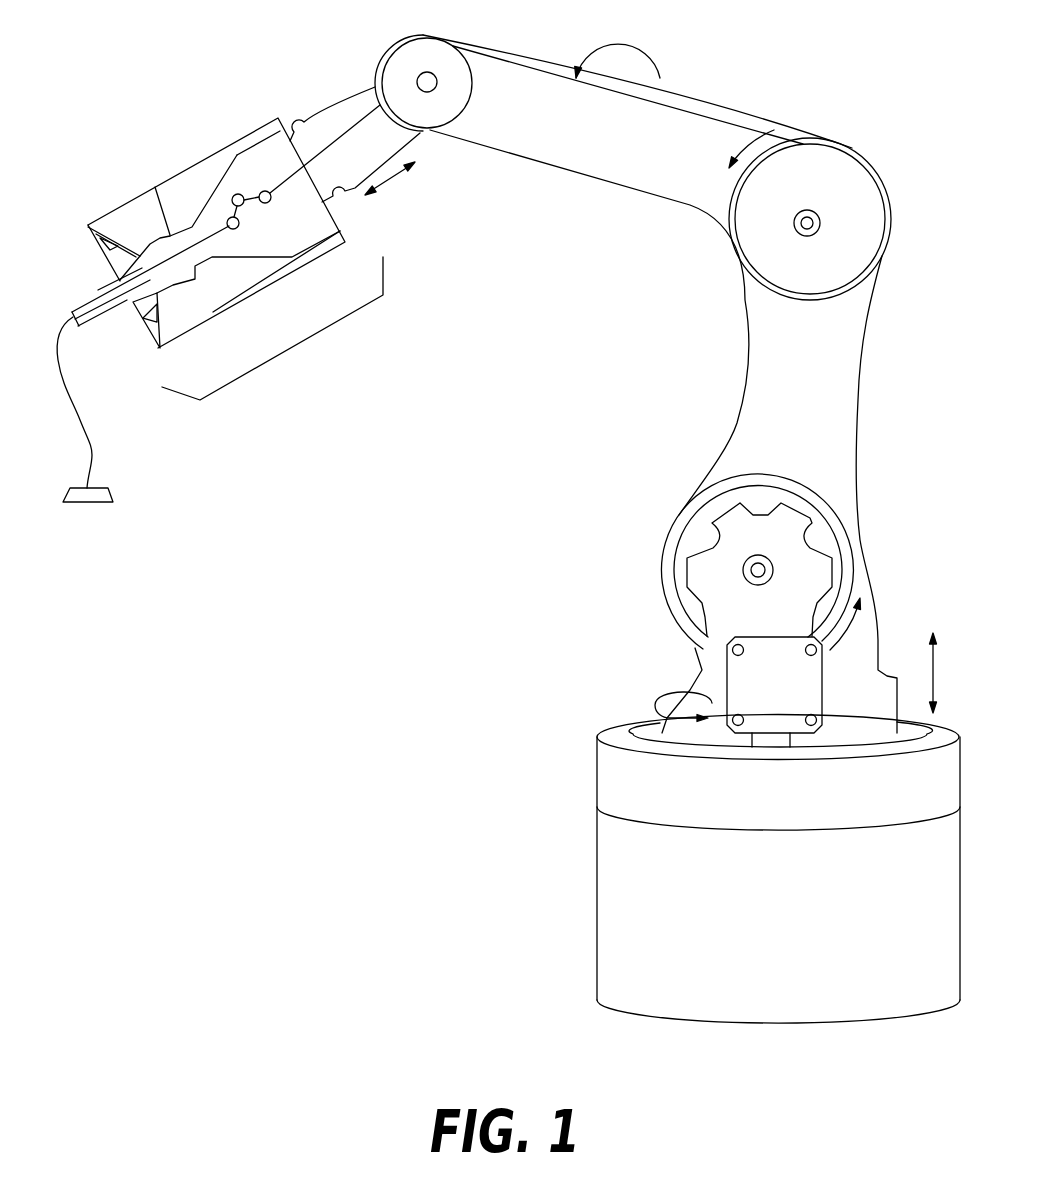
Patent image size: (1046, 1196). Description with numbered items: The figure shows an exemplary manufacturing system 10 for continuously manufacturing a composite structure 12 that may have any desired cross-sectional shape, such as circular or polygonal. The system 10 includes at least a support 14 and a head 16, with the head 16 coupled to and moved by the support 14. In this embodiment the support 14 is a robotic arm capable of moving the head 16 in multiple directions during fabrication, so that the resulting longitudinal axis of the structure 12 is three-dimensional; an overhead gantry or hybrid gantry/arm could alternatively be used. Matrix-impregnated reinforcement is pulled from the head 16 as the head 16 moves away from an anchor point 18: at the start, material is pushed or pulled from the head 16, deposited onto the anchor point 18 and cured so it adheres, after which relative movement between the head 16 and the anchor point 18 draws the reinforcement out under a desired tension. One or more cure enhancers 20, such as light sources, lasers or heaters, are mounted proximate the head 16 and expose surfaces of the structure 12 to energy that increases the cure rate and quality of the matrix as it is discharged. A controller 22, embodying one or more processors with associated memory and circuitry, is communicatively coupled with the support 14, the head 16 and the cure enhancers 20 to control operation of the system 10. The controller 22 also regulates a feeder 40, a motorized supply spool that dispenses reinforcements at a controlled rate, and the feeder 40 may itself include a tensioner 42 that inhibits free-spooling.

The system 10 is at (400, 768).
The composite structure 12 is at (92, 454).
The support 14 is at (780, 443).
The head 16 is at (300, 343).
The anchor point 18 is at (82, 502).
The cure enhancer 20 is at (106, 250).
The controller 22 is at (761, 698).
The feeder 40 is at (800, 283).
The tensioner 42 is at (820, 226).